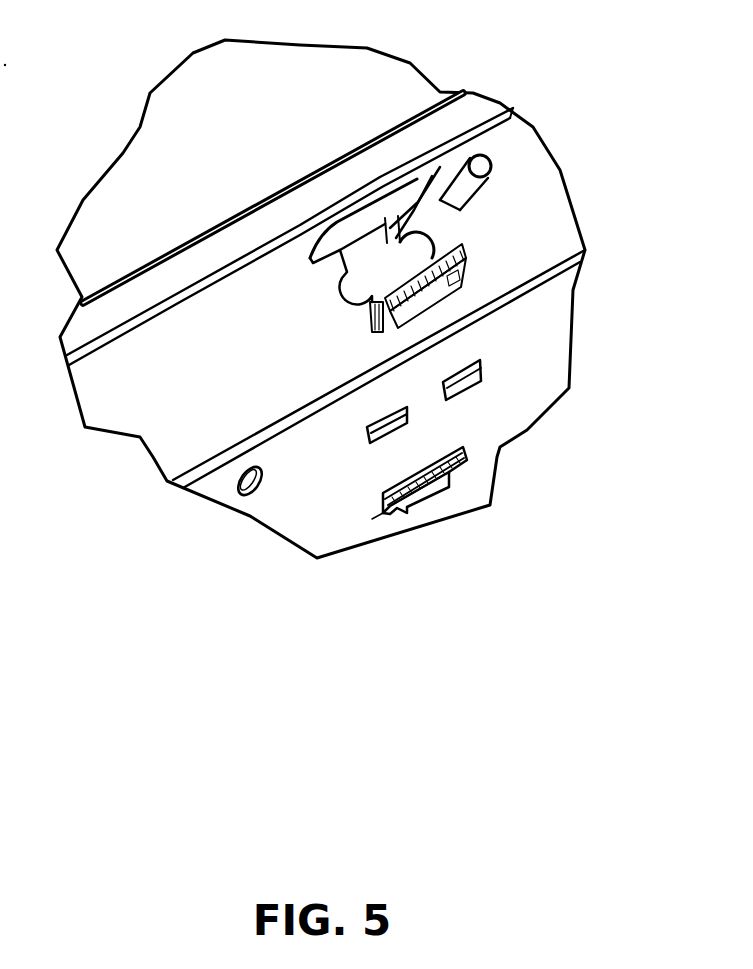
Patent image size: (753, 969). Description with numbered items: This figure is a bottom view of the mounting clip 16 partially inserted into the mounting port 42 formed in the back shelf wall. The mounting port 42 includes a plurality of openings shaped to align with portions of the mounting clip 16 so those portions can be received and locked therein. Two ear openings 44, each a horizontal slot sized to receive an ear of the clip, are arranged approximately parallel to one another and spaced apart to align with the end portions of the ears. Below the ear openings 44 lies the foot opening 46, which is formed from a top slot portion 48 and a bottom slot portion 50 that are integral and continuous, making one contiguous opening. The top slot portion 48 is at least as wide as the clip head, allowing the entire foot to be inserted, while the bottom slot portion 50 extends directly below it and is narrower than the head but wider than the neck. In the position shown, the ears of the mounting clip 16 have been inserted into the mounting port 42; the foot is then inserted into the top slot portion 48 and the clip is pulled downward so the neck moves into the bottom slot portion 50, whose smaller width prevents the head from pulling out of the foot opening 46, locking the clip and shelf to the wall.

The mounting clip 16 is at (407, 193).
The mounting port 42 is at (502, 400).
The ear openings 44 is at (463, 363).
The foot opening 46 is at (467, 260).
The top slot portion 48 is at (463, 453).
The bottom slot portion 50 is at (443, 493).